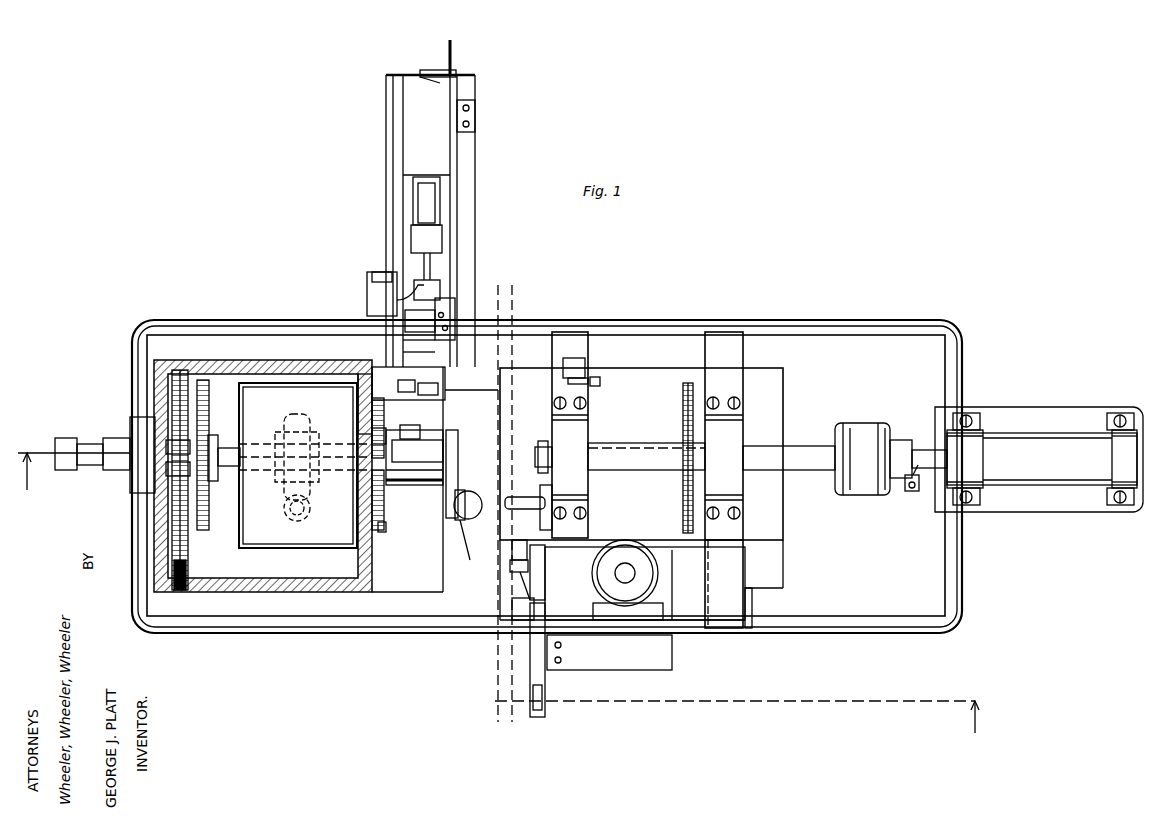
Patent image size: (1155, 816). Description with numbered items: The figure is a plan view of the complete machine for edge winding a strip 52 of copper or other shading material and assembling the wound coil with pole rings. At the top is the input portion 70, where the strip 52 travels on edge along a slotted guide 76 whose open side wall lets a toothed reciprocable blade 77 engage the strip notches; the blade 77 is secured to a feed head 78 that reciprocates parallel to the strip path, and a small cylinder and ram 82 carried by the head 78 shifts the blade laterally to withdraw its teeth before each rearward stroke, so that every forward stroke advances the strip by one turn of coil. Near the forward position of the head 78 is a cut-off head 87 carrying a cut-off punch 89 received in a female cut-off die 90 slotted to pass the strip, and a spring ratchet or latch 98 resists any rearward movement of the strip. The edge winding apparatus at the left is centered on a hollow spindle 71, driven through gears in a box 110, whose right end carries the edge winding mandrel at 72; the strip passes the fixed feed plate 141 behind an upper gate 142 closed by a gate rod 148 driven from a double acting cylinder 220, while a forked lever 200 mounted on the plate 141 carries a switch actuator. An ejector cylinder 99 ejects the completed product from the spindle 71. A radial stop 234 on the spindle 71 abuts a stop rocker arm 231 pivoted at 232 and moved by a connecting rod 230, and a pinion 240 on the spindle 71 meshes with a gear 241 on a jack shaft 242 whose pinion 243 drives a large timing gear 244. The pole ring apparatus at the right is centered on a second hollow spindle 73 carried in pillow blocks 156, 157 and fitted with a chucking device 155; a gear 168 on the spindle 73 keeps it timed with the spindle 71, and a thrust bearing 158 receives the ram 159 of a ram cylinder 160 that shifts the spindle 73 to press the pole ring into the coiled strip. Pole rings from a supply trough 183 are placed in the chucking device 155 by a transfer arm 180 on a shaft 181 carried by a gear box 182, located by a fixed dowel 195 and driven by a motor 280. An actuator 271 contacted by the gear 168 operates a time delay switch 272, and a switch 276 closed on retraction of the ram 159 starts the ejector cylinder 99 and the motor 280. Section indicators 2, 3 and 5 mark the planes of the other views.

The section line 2- 2 is at (504, 602).
The section line 3- 3 is at (520, 515).
The section line 5- 5 is at (512, 290).
The strip 52 is at (452, 55).
The input portion 70 is at (478, 186).
The spindle 71 is at (233, 440).
The edge winding mandrel 72 is at (407, 479).
The spindle 73 is at (620, 457).
The slotted guide 76 is at (452, 262).
The toothed reciprocable blade 77 is at (448, 303).
The feed head 78 is at (418, 323).
The small cylinder and ram 82 is at (413, 212).
The cut-off head 87 is at (365, 380).
The cut-off punch 89 is at (408, 382).
The female cut-off die 90 is at (446, 392).
The spring ratchet or latch 98 is at (453, 73).
The ejector cylinder 99 is at (86, 440).
The gear box 110 is at (312, 545).
The feed plate 141 is at (460, 505).
The upper gate 142 is at (459, 445).
The gate rod 148 is at (478, 568).
The chucking device 155 is at (540, 448).
The pillow block 156 is at (588, 482).
The pillow block 157 is at (745, 495).
The thrust bearing 158 is at (852, 432).
The ram 159 is at (928, 452).
The ram cylinder 160 is at (1018, 440).
The gear 168 is at (683, 500).
The transfer arm 180 is at (512, 582).
The shaft 181 is at (545, 573).
The gear box 182 is at (658, 630).
The supply trough 183 is at (545, 678).
The fixed dowel 195 is at (513, 497).
The forked lever 200 is at (425, 399).
The cylinder 220 is at (465, 540).
The connecting rod 230 is at (384, 533).
The stop rocker arm 231 is at (374, 514).
The pivot 232 is at (374, 410).
The stop 234 is at (378, 436).
The pinion 240 is at (186, 400).
The gear 241 is at (196, 505).
The jack shaft 242 is at (170, 500).
The pinion 243 is at (170, 514).
The timing gear 244 is at (188, 578).
The actuator 271 is at (601, 382).
The switch 272 is at (580, 368).
The switch 276 is at (915, 492).
The motor 280 is at (648, 574).